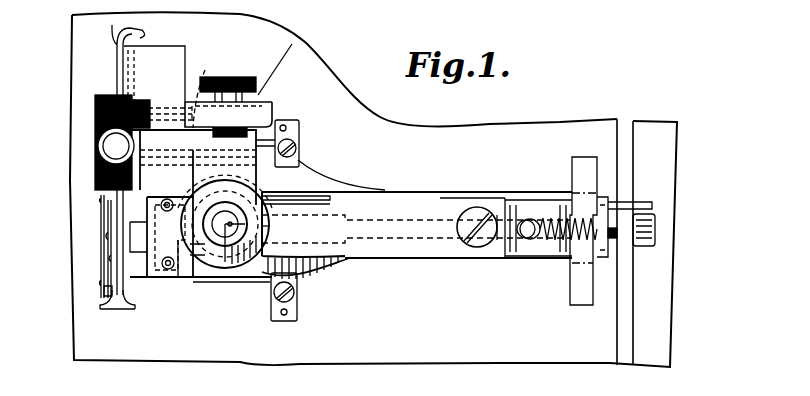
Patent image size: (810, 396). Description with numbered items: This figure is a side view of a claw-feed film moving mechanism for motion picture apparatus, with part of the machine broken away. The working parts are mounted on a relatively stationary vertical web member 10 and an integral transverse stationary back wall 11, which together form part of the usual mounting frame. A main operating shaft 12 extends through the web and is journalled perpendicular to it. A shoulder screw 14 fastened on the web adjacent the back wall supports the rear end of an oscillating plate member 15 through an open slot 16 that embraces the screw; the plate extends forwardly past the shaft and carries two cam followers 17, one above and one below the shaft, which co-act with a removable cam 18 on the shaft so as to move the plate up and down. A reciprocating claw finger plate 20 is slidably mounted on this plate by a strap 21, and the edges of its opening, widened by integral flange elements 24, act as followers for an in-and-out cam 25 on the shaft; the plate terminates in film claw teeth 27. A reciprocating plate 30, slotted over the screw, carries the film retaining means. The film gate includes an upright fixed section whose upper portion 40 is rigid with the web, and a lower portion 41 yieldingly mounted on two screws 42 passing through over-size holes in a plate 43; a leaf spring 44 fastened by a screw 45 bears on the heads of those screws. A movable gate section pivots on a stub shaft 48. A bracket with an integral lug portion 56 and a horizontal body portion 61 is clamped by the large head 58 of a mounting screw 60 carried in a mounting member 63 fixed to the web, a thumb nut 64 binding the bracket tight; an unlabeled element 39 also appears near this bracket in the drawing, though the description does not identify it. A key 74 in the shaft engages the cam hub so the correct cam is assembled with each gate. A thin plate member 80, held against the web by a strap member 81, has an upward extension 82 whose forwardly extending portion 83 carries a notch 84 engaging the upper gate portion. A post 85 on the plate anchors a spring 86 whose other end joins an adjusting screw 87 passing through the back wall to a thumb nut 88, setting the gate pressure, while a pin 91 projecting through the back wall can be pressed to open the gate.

The web member 10 is at (505, 355).
The back wall 11 is at (625, 318).
The main operating shaft 12 is at (237, 262).
The shoulder screw 14 is at (474, 212).
The oscillating plate member 15 is at (360, 262).
The open slot 16 is at (518, 262).
The cam followers 17 is at (254, 268).
The cam 18 is at (222, 262).
The reciprocating claw finger plate 20 is at (405, 262).
The strap 21 is at (168, 280).
The flange element 24 is at (190, 280).
The in-and-out cam 25 is at (302, 199).
The film claw teeth 27 is at (140, 284).
The reciprocating plate 30 is at (492, 262).
The housing edge 39 is at (341, 175).
The upper portion of fixed gate section 40 is at (150, 36).
The lower portion of fixed gate section 41 is at (108, 312).
The screws 42 is at (100, 198).
The plate 43 is at (100, 290).
The leaf spring 44 is at (100, 268).
The screw 45 is at (100, 240).
The stub shaft 48 is at (110, 148).
The lug portion 56 is at (266, 178).
The head of mounting screw 58 is at (252, 132).
The mounting screw 60 is at (230, 77).
The horizontal body portion 61 is at (300, 130).
The mounting member 63 is at (258, 108).
The thumb nut 64 is at (286, 58).
The key 74 is at (270, 228).
The thin plate member 80 is at (322, 275).
The strap member 81 is at (300, 146).
The upward extension 82 is at (206, 89).
The forwardly extending portion 83 is at (125, 116).
The notch 84 is at (96, 121).
The post 85 is at (528, 219).
The spring 86 is at (552, 262).
The adjusting screw 87 is at (614, 240).
The thumb nut 88 is at (656, 228).
The pin 91 is at (650, 200).